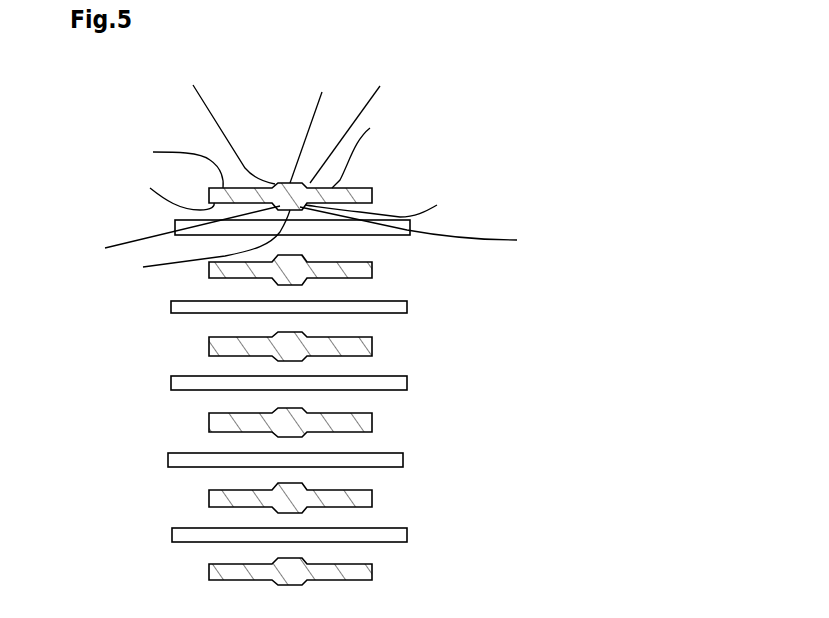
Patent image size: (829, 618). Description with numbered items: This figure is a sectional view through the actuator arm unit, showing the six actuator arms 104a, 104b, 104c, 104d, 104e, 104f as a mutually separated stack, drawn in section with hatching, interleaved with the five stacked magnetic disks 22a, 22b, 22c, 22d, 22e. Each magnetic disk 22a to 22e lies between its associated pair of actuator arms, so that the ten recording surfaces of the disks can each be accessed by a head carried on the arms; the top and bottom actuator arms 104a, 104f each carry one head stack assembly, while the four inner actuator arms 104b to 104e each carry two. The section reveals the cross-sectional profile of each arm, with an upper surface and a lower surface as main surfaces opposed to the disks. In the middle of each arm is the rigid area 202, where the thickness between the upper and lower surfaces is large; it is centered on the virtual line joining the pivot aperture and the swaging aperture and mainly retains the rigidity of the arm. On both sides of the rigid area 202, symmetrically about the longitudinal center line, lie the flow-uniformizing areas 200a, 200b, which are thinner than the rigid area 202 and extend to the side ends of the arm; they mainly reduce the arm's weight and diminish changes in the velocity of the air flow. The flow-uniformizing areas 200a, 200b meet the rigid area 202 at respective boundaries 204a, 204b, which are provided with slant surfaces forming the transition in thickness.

The actuator arm 104a is at (373, 195).
The actuator arm 104b is at (373, 270).
The actuator arm 104c is at (373, 345).
The actuator arm 104d is at (373, 420).
The actuator arm 104e is at (373, 497).
The actuator arm 104f is at (373, 572).
The magnetic disk 22a is at (175, 227).
The magnetic disk 22b is at (171, 309).
The magnetic disk 22c is at (171, 385).
The magnetic disk 22d is at (168, 460).
The magnetic disk 22e is at (172, 537).
The flow-uniformizing area 200a is at (155, 174).
The flow-uniformizing area 200b is at (405, 163).
The rigid area 202 is at (222, 173).
The boundary 204a is at (162, 157).
The boundary 204b is at (438, 157).